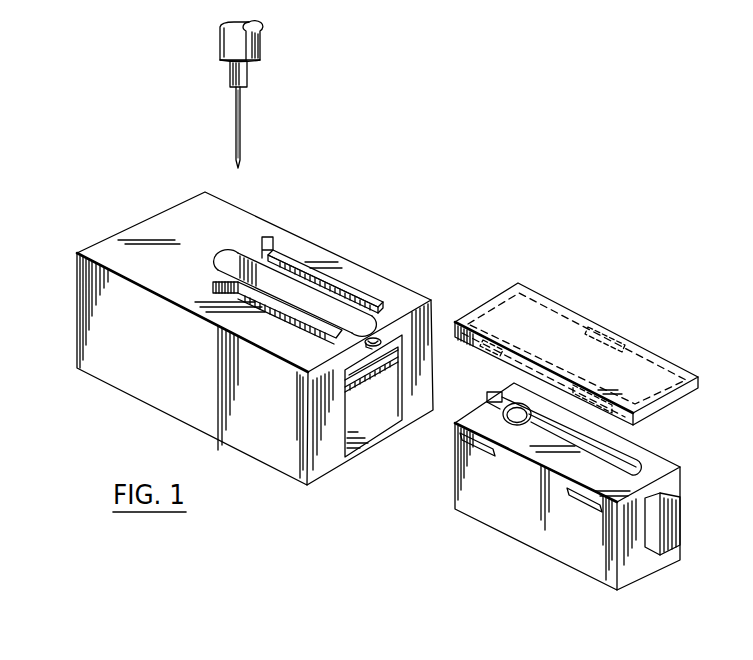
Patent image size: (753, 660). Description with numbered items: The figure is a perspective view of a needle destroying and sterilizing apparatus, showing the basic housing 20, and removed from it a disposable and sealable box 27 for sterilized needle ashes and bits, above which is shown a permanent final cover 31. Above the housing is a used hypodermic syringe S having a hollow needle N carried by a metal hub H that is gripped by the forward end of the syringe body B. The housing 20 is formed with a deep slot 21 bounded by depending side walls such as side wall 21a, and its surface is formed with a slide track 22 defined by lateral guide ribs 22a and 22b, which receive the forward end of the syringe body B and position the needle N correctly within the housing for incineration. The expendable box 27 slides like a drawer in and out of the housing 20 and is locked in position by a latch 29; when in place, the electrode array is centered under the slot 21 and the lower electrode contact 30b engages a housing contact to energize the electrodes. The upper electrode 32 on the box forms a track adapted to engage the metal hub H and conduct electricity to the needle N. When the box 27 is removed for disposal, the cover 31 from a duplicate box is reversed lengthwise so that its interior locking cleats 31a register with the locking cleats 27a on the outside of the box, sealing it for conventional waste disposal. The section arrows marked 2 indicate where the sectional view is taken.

The hypodermic syringe S is at (217, 68).
The syringe body B is at (262, 43).
The metal hub H is at (248, 74).
The hollow needle N is at (247, 133).
The section line 2- 2 is at (142, 210).
The housing 20 is at (311, 230).
The deep slot 21 is at (242, 253).
The depending side wall 21a is at (262, 252).
The slide track 22 is at (305, 278).
The lateral guide rib 22a is at (337, 280).
The lateral guide rib 22b is at (305, 316).
The latch 29 is at (380, 338).
The cover 31 is at (576, 299).
The interior locking cleat 31a is at (612, 328).
The disposable box 27 is at (508, 527).
The locking cleat 27a is at (478, 440).
The upper electrode 32 is at (528, 433).
The lower electrode contact 30b is at (500, 381).